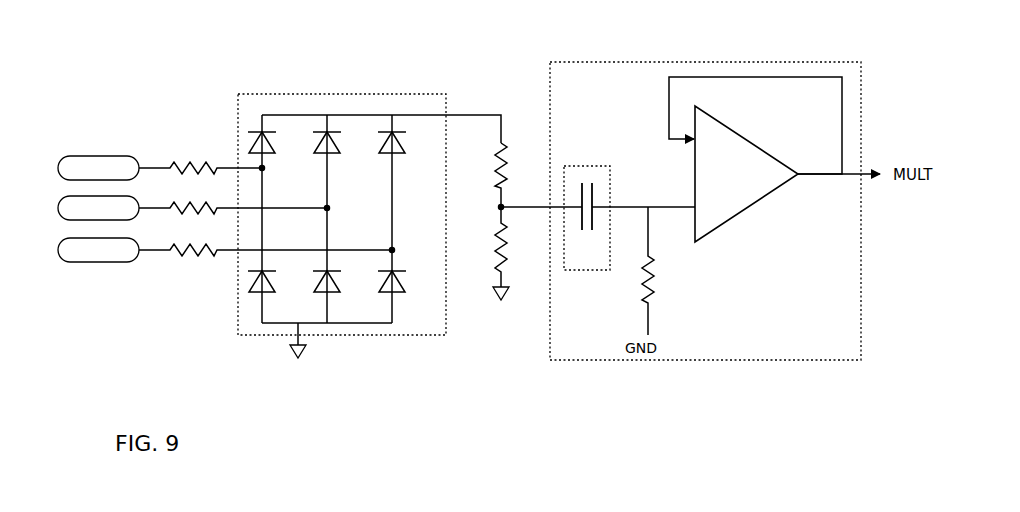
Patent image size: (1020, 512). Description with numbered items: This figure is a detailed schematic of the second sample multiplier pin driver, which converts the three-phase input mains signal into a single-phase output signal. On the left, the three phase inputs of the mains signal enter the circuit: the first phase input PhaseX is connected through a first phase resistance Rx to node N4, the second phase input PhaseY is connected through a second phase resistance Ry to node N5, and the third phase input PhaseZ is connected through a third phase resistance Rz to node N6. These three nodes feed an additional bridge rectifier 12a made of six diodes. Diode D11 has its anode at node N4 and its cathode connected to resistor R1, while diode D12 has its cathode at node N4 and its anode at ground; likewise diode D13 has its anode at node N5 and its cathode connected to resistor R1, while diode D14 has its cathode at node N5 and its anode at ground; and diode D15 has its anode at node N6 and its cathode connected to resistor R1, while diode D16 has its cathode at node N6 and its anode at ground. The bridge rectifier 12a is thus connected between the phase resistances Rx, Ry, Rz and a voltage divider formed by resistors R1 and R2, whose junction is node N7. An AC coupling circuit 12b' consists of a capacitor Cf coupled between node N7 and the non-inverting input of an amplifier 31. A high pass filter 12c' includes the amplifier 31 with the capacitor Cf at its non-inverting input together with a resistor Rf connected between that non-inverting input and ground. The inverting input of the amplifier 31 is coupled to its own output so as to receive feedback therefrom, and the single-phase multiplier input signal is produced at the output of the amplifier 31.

The additional bridge rectifier 12a is at (238, 94).
The AC coupling circuit 12b' is at (588, 204).
The high pass filter 12c' is at (689, 197).
The amplifier 31 is at (727, 222).
The diode D11 is at (278, 142).
The diode D12 is at (278, 281).
The diode D13 is at (343, 142).
The diode D14 is at (343, 281).
The diode D15 is at (408, 142).
The diode D16 is at (408, 281).
The node N4 is at (274, 176).
The node N5 is at (339, 216).
The node N6 is at (403, 241).
The node N7 is at (489, 208).
The first phase resistance Rx is at (200, 159).
The second phase resistance Ry is at (233, 199).
The third phase resistance Rz is at (265, 240).
The resistor R1 is at (514, 175).
The resistor R2 is at (514, 247).
The capacitor Cf is at (588, 217).
The resistor Rf is at (638, 271).
The first phase input PhaseX is at (98, 168).
The second phase input PhaseY is at (98, 208).
The third phase input PhaseZ is at (98, 250).